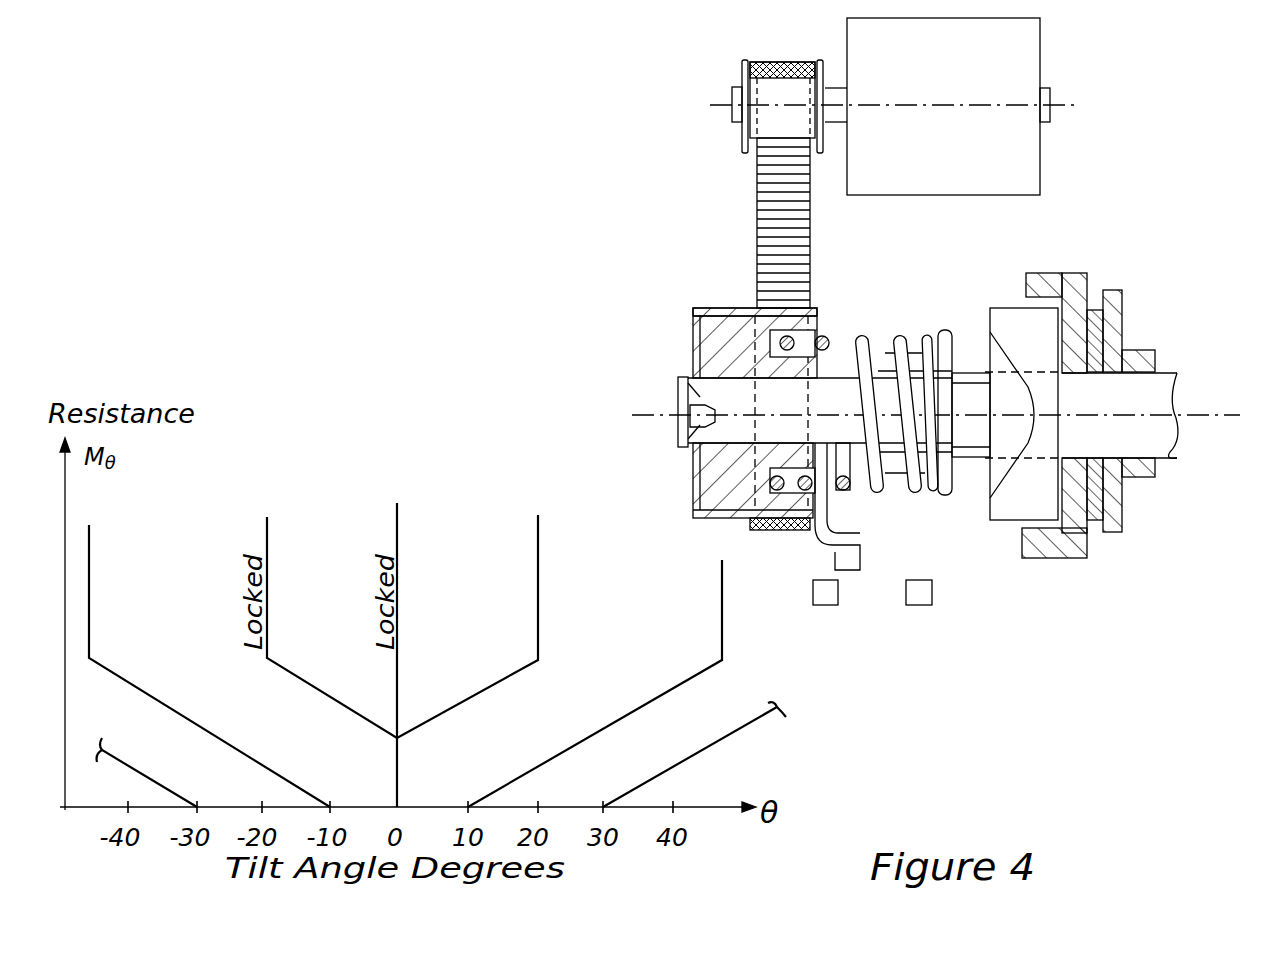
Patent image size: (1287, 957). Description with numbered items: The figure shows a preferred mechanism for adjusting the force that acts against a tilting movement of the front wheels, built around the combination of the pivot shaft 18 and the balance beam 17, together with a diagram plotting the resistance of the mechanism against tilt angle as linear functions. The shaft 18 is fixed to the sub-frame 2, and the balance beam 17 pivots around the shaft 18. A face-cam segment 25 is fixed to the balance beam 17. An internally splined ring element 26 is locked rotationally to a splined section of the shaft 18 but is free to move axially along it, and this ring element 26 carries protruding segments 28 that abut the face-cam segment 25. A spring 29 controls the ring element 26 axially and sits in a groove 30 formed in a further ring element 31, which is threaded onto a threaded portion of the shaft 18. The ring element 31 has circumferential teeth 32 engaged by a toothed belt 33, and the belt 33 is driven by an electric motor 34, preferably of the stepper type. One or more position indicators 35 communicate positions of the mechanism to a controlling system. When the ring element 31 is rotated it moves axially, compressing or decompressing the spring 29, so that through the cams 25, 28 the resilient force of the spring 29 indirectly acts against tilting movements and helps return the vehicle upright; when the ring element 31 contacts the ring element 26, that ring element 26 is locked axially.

The sub-frame 2 is at (1115, 322).
The balance beam 17 is at (1080, 285).
The pivot shaft 18 is at (700, 398).
The face-cam segment 25 is at (1012, 322).
The internally splined ring element 26 is at (943, 340).
The protruding segments 28 is at (987, 400).
The spring 29 is at (860, 342).
The groove 30 is at (838, 495).
The ring element 31 is at (705, 360).
The circumferential teeth 32 is at (718, 312).
The toothed belt 33 is at (775, 232).
The electric motor 34 is at (1023, 160).
The position indicators 35 is at (822, 596).